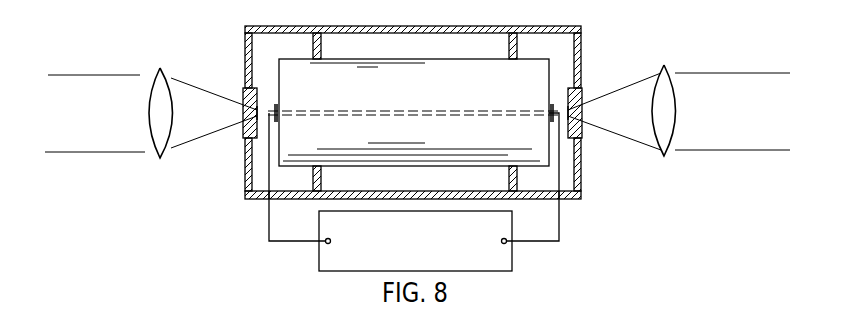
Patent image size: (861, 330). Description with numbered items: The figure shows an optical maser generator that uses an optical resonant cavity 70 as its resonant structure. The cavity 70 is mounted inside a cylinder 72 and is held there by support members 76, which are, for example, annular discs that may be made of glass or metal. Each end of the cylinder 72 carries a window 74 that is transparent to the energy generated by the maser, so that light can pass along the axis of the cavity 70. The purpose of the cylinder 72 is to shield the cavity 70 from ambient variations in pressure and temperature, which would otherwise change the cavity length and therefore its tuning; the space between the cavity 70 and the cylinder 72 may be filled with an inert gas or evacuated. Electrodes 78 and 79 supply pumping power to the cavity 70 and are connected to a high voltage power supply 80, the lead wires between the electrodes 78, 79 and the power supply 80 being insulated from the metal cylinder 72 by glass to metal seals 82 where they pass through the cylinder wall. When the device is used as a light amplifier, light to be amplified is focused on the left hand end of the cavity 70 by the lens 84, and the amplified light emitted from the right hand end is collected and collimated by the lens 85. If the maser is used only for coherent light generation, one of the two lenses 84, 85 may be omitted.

The optical resonant cavity 70 is at (435, 89).
The cylinder 72 is at (378, 26).
The window 74 is at (243, 90).
The support members 76 is at (322, 46).
The electrode 78 is at (255, 115).
The electrode 79 is at (583, 112).
The high voltage power supply 80 is at (513, 258).
The glass to metal seals 82 is at (264, 200).
The lens 84 is at (143, 113).
The lens 85 is at (671, 112).